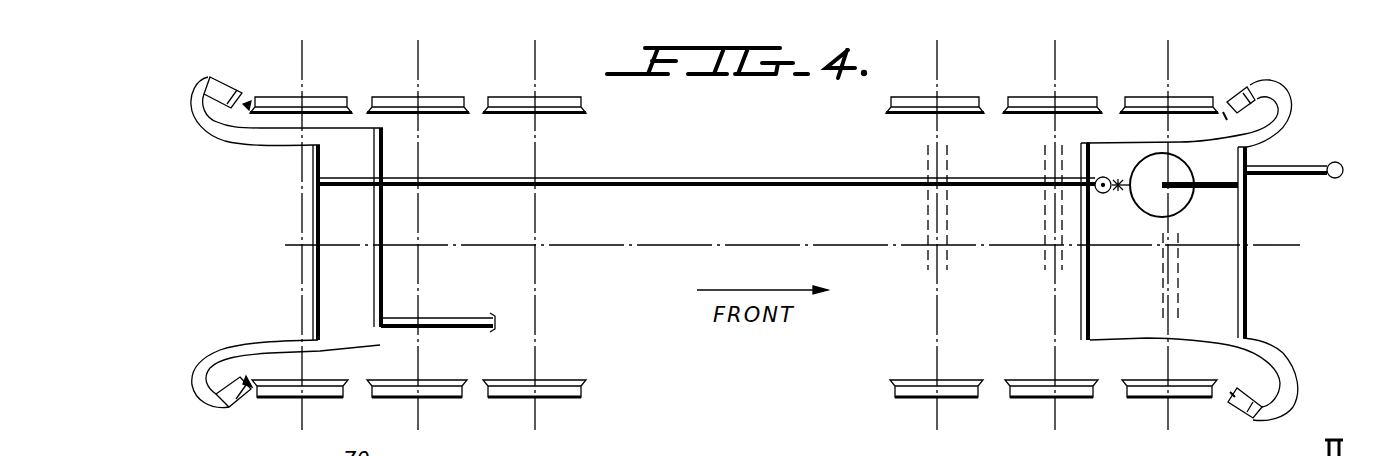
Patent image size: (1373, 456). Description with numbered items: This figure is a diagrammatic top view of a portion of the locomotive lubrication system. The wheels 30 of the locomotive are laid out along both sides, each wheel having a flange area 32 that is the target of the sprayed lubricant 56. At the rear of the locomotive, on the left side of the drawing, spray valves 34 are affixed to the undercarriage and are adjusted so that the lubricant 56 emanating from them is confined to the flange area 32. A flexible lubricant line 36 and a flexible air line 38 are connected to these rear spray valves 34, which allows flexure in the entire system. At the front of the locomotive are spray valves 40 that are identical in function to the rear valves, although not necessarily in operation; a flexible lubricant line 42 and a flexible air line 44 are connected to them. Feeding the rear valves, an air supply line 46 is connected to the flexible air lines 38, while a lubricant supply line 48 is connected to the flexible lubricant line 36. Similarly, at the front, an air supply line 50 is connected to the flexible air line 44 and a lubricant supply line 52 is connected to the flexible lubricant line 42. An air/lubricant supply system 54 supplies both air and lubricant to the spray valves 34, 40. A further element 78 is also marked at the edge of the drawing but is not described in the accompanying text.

The wheels 30 is at (323, 96).
The flange area 32 is at (353, 110).
The spray valves 34 is at (239, 78).
The flexible lubricant line 36 is at (220, 134).
The flexible air line 38 is at (268, 129).
The spray valves 40 is at (1240, 87).
The flexible lubricant line 42 is at (1288, 95).
The flexible air line 44 is at (1285, 125).
The air supply line 46 is at (382, 166).
The lubricant supply line 48 is at (330, 207).
The air supply line 50 is at (1247, 228).
The lubricant supply line 52 is at (1080, 202).
The air/lubricant supply system 54 is at (1120, 198).
The lubricant 56 is at (248, 100).
The element 78 is at (1304, 446).